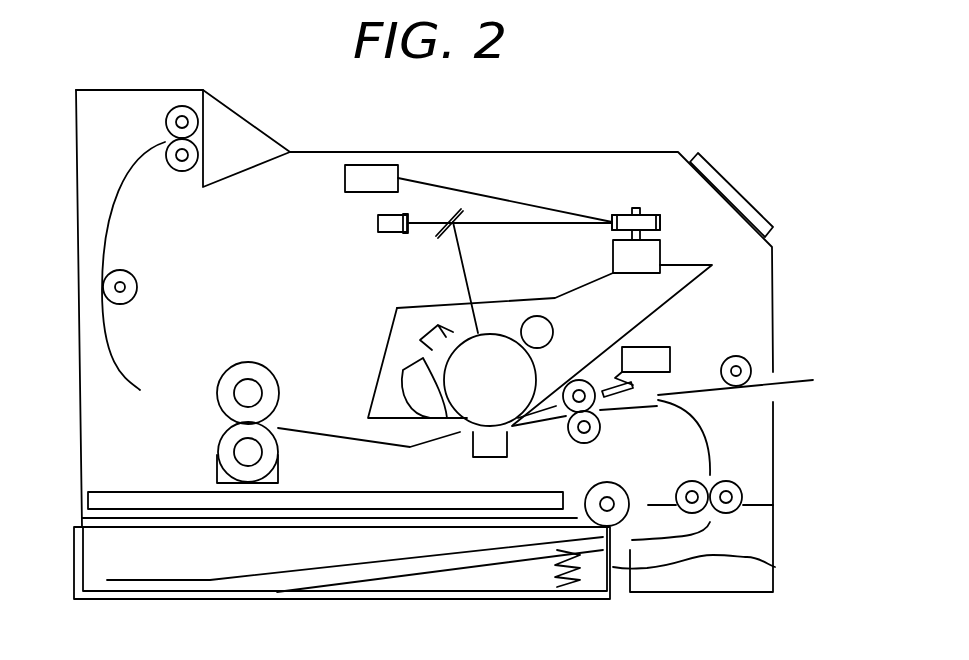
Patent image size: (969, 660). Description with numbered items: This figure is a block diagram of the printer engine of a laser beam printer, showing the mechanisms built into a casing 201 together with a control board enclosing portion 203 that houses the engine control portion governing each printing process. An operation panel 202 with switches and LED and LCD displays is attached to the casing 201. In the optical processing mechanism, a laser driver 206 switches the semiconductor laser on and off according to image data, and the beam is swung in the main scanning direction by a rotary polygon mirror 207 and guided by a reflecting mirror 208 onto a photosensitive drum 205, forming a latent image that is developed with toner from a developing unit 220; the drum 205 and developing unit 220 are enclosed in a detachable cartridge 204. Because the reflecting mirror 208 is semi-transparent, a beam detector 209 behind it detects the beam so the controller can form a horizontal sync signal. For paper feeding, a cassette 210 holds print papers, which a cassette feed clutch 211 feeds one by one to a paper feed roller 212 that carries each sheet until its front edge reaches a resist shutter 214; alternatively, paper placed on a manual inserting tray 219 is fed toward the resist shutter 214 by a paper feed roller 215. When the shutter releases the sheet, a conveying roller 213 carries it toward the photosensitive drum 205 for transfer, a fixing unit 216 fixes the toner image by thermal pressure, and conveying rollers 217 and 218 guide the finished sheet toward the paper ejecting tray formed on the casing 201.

The casing 201 is at (580, 152).
The operation panel 202 is at (740, 182).
The control board enclosing portion 203 is at (395, 492).
The detachable cartridge 204 is at (694, 263).
The photosensitive drum 205 is at (505, 333).
The laser driver 206 is at (345, 180).
The rotary polygon mirror 207 is at (650, 208).
The reflecting mirror 208 is at (446, 240).
The beam detector 209 is at (385, 233).
The cassette 210 is at (775, 567).
The cassette feed clutch 211 is at (588, 494).
The paper feed roller 212 is at (735, 480).
The conveying roller 213 is at (600, 434).
The resist shutter 214 is at (633, 390).
The paper feed roller 215 is at (737, 355).
The fixing unit 216 is at (254, 363).
The conveying roller 217 is at (138, 287).
The conveying roller 218 is at (165, 121).
The manual inserting tray 219 is at (790, 380).
The developing unit 220 is at (553, 325).